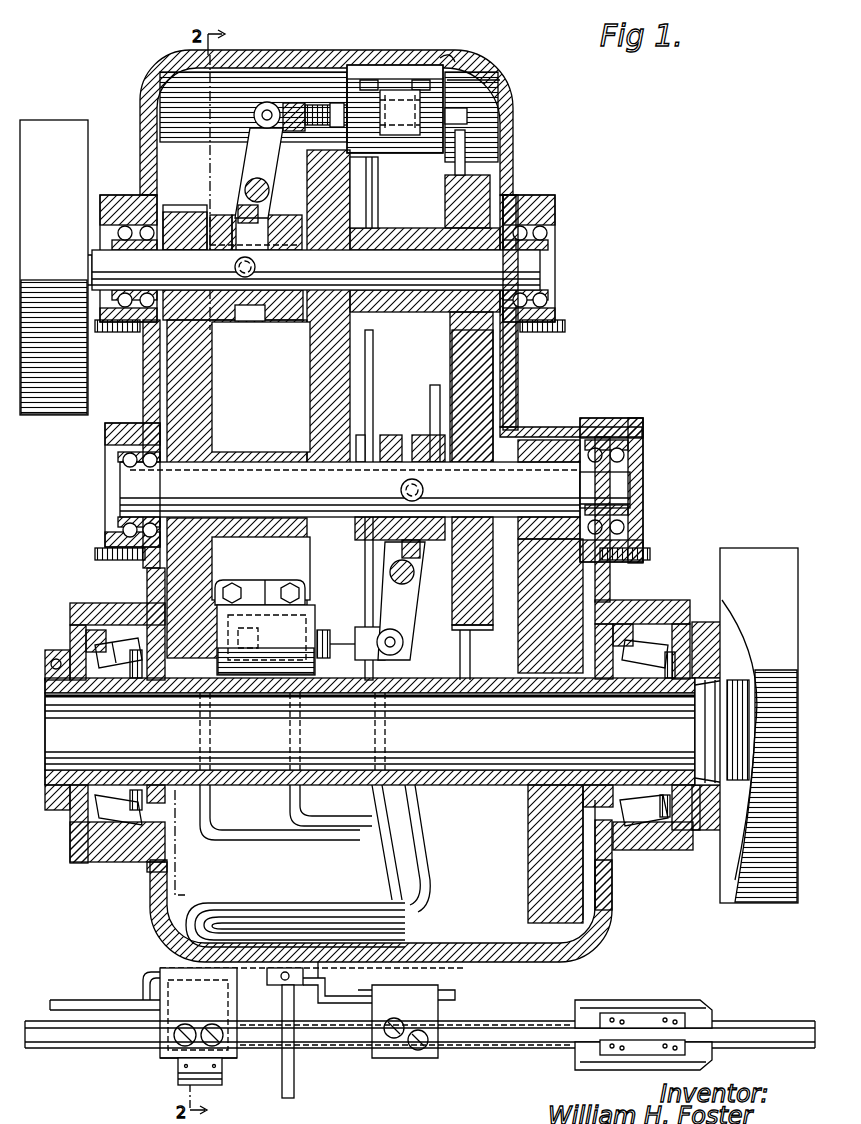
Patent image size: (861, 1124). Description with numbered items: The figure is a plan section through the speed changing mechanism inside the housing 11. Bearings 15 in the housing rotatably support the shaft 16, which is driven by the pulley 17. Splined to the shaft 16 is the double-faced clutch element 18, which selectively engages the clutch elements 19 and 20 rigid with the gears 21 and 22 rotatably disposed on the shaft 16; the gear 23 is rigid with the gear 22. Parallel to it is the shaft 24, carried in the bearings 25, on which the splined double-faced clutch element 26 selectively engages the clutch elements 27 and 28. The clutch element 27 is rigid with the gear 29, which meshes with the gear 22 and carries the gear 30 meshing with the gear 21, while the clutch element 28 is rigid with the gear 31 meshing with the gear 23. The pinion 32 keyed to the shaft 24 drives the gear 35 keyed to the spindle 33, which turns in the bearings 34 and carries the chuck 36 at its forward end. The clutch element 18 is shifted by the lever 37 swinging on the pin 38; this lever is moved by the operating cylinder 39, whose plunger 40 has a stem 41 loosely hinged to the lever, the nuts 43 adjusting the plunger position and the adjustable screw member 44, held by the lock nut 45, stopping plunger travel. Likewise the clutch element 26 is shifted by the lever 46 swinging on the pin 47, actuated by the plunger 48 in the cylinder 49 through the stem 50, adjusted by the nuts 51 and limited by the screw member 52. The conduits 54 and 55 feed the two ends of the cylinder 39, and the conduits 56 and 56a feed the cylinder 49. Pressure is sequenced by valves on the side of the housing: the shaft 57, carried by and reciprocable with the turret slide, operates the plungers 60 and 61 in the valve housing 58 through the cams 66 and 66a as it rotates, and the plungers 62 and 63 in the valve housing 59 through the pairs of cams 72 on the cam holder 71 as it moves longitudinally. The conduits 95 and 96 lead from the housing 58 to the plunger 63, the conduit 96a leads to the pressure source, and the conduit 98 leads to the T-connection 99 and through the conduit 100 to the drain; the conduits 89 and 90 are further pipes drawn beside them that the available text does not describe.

The housing 11 is at (512, 124).
The bearings 15 is at (135, 207).
The shaft 16 is at (388, 252).
The pulley 17 is at (60, 130).
The double-faced clutch element 18 is at (245, 320).
The clutch element 19 is at (216, 215).
The clutch element 20 is at (290, 215).
The gear 21 is at (185, 212).
The gear 22 is at (308, 336).
The gear 23 is at (488, 195).
The shaft 24 is at (258, 490).
The bearings 25 is at (130, 425).
The double-faced clutch element 26 is at (412, 447).
The clutch element 27 is at (362, 438).
The clutch element 28 is at (430, 435).
The gear 29 is at (370, 400).
The gear 30 is at (212, 388).
The gear 31 is at (436, 392).
The gear or pinion 32 is at (560, 440).
The spindle 33 is at (500, 780).
The bearings 34 is at (115, 640).
The gear 35 is at (520, 650).
The chuck 36 is at (740, 575).
The lever 37 is at (250, 160).
The pin 38 is at (269, 184).
The operating cylinder 39 is at (448, 68).
The plunger 40 is at (412, 70).
The stem 41 is at (318, 108).
The nuts 43 is at (390, 118).
The adjustable screw member 44 is at (487, 82).
The lock nut 45 is at (455, 112).
The lever 46 is at (410, 606).
The pin 47 is at (414, 578).
The plunger 48 is at (250, 612).
The cylinder 49 is at (268, 612).
The stem 50 is at (333, 640).
The nuts 51 is at (255, 630).
The screw member 52 is at (245, 640).
The conduit 54 is at (378, 190).
The conduit 55 is at (467, 162).
The conduit 56 is at (212, 806).
The conduit 56a is at (310, 810).
The shaft 57 is at (778, 1028).
The valve housing 58 is at (232, 1020).
The valve housing 59 is at (440, 1008).
The plunger 60 is at (172, 1062).
The plunger 61 is at (220, 1060).
The plunger 62 is at (392, 1060).
The plunger 63 is at (420, 1060).
The cam 66 is at (180, 1083).
The cam 66a is at (212, 1085).
The cam holder 71 is at (642, 1058).
The cams 72 is at (640, 1002).
The pipe 89 is at (232, 915).
The pipe 90 is at (276, 912).
The conduit 95 is at (302, 930).
The conduit 96 is at (340, 925).
The conduit 96a is at (140, 1003).
The conduit 98 is at (148, 975).
The T-connection 99 is at (282, 990).
The conduit 100 is at (294, 1068).